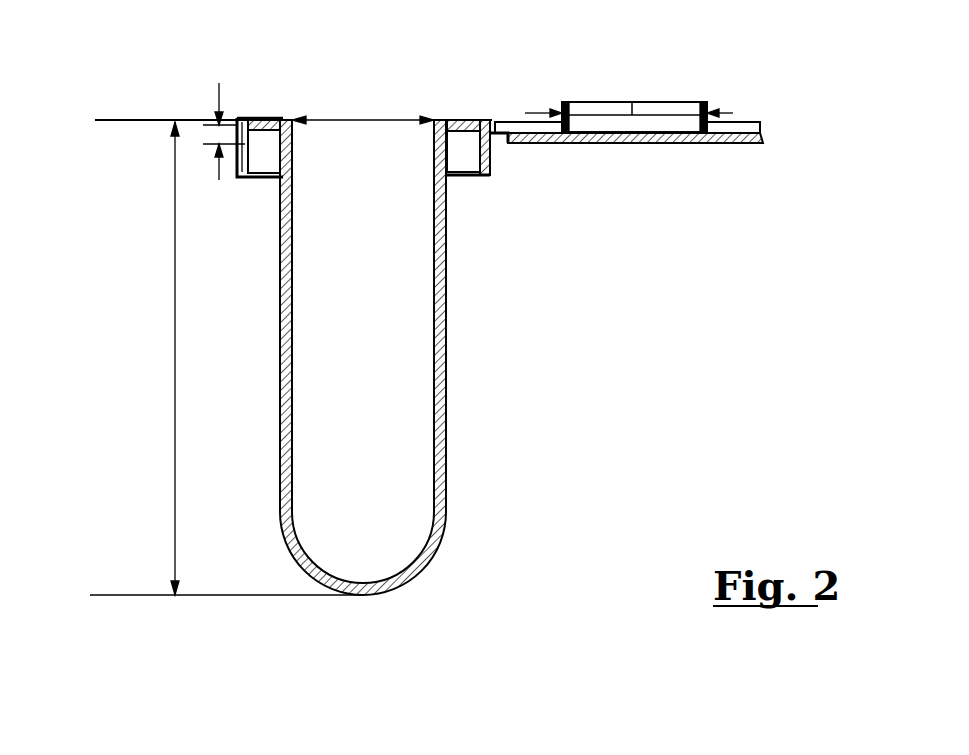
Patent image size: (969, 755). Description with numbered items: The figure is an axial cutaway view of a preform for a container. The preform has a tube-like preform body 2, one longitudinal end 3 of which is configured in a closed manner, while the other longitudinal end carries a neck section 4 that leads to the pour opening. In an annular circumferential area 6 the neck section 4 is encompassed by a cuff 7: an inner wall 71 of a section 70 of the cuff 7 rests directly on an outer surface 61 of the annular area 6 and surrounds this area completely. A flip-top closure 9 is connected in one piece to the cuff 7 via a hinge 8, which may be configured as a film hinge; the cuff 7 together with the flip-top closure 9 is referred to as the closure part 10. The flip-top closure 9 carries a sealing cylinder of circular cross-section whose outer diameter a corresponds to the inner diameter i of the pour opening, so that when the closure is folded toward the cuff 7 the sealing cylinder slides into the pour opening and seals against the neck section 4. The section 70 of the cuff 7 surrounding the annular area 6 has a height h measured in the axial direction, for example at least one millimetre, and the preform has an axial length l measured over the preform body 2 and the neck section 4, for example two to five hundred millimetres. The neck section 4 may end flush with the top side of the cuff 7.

The preform body 2 is at (446, 432).
The longitudinal end 3 is at (373, 597).
The neck section 4 is at (452, 170).
The annular circumferential area 6 is at (433, 133).
The cuff 7 is at (252, 118).
The hinge 8 is at (495, 122).
The flip-top closure 9 is at (725, 145).
The closure part 10 is at (512, 73).
The outer surface 61 is at (263, 118).
The section of the cuff 70 is at (487, 155).
The inner wall 71 is at (443, 117).
The outer diameter a is at (640, 100).
The height h is at (210, 138).
The inner diameter i is at (358, 117).
The axial length l is at (175, 357).